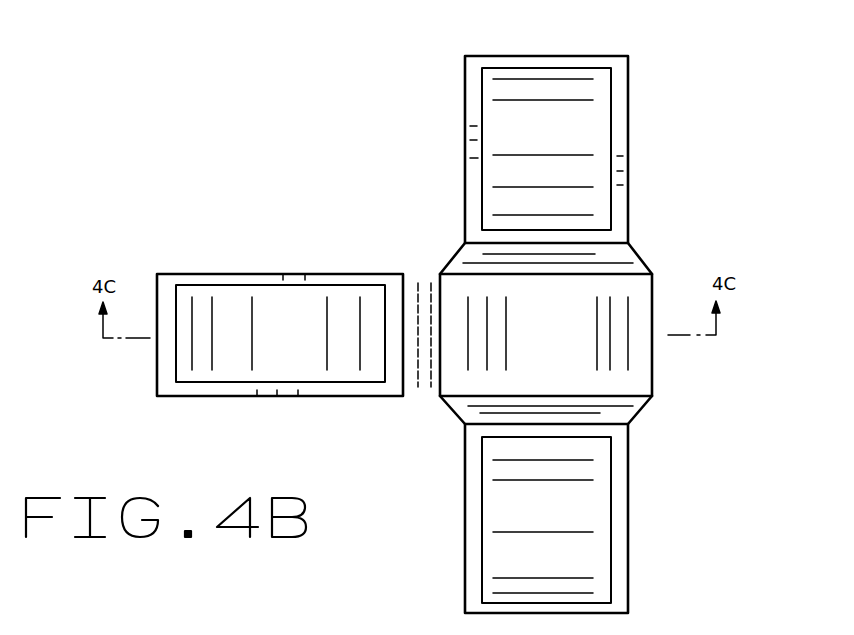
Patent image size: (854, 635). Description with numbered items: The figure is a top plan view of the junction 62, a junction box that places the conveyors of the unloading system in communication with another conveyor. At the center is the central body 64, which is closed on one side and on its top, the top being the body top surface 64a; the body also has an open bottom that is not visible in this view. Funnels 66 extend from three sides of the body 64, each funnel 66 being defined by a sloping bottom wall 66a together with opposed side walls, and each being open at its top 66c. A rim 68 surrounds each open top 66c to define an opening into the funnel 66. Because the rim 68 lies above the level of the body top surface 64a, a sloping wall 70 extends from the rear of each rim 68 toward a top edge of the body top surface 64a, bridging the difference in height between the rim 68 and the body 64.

The junction 62 is at (652, 188).
The central body 64 is at (591, 313).
The body top surface 64a is at (577, 352).
The funnel 66 is at (650, 72).
The sloping bottom wall 66a is at (560, 137).
The open top 66c is at (484, 145).
The rim 68 is at (618, 117).
The sloping wall 70 is at (598, 262).